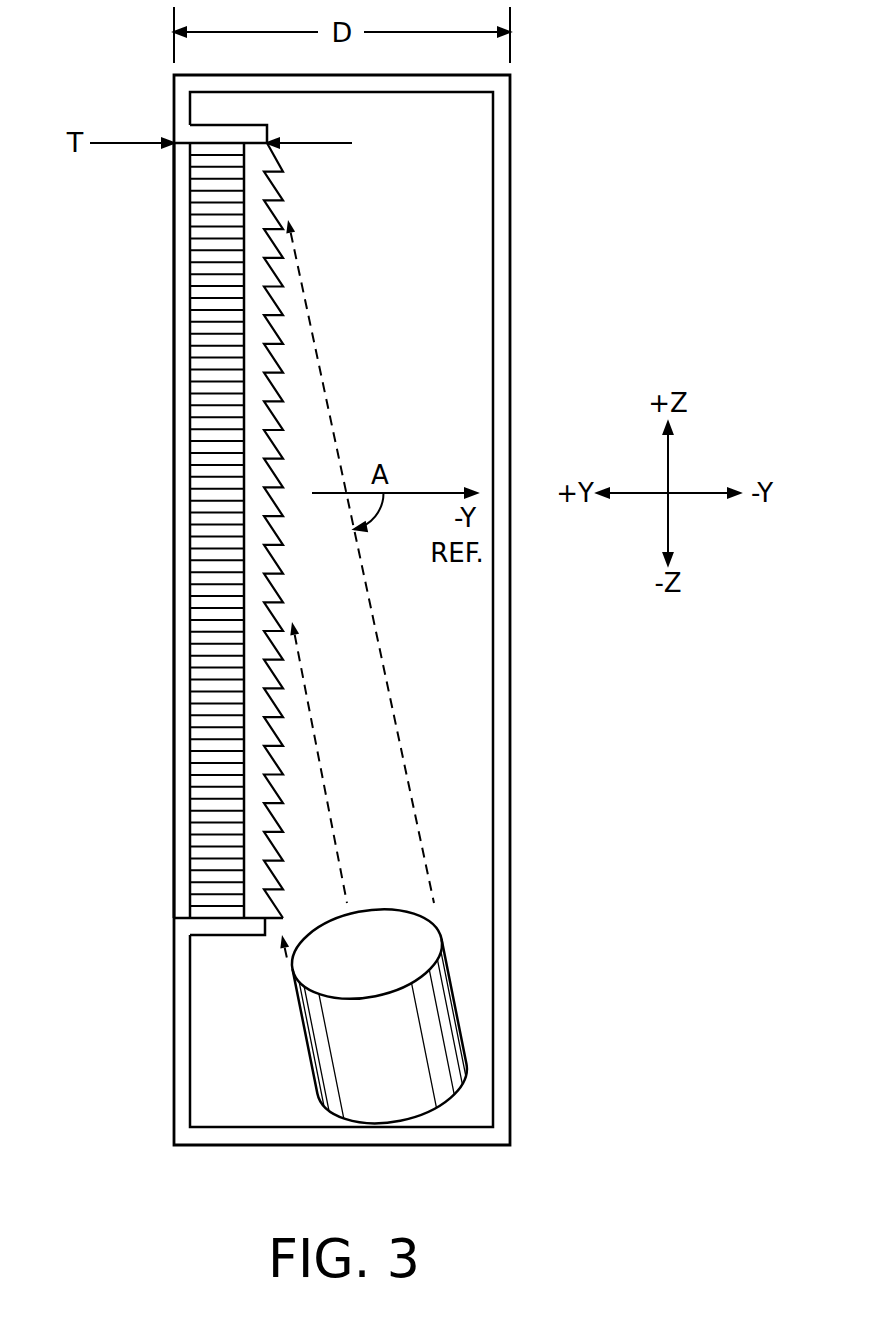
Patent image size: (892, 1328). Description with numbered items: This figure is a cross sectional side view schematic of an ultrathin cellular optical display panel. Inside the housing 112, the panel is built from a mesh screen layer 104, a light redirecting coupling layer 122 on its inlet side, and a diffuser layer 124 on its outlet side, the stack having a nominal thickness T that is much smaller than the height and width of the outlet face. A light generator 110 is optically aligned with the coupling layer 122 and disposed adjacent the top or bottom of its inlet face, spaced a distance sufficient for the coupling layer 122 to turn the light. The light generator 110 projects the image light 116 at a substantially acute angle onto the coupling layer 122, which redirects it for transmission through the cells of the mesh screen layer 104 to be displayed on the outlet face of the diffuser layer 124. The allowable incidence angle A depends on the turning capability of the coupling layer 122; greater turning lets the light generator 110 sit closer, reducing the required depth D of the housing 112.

The mesh screen layer 104 is at (217, 247).
The light generator 110 is at (440, 1032).
The housing 112 is at (183, 980).
The image light 116 is at (372, 618).
The light redirecting coupling layer 122 is at (257, 340).
The diffuser layer 124 is at (182, 468).